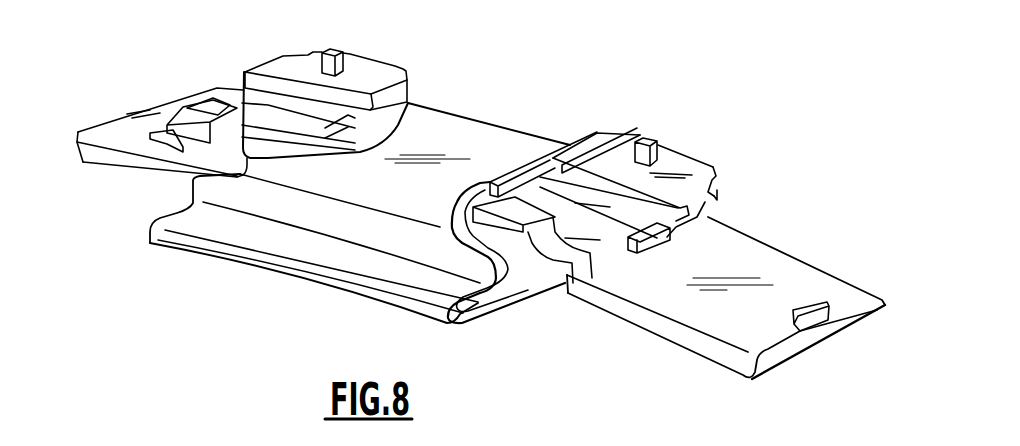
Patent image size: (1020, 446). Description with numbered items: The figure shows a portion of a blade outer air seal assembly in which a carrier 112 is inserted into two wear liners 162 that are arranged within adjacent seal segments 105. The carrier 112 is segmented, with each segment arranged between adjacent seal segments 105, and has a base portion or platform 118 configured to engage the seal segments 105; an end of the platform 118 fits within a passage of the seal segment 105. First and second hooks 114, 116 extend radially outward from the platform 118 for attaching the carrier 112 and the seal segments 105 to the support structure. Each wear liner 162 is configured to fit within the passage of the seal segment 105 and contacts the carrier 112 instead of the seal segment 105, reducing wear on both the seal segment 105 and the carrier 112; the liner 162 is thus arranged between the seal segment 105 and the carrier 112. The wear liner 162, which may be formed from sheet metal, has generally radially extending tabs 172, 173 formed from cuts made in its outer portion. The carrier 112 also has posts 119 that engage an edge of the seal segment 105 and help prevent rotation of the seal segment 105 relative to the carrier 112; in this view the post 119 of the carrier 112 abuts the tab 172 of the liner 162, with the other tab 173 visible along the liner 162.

The seal segment 105 is at (462, 128).
The carrier 112 is at (692, 168).
The first hook 114 is at (707, 193).
The second hook 116 is at (530, 232).
The platform 118 is at (615, 217).
The post 119 is at (341, 130).
The wear liner 162 is at (528, 208).
The tab 172 is at (491, 182).
The tab 173 is at (421, 107).